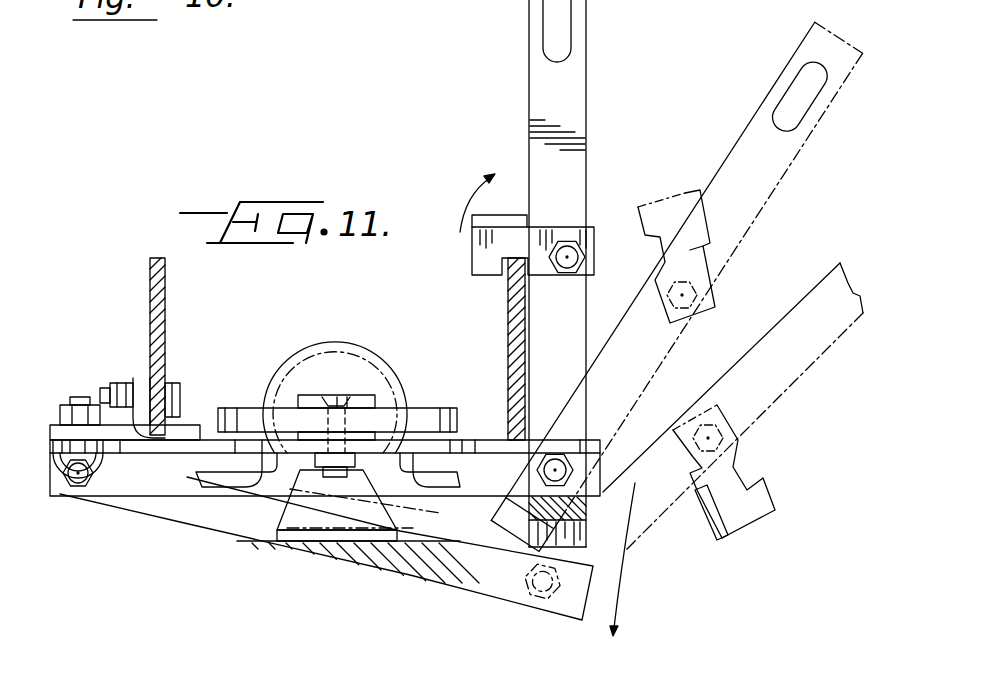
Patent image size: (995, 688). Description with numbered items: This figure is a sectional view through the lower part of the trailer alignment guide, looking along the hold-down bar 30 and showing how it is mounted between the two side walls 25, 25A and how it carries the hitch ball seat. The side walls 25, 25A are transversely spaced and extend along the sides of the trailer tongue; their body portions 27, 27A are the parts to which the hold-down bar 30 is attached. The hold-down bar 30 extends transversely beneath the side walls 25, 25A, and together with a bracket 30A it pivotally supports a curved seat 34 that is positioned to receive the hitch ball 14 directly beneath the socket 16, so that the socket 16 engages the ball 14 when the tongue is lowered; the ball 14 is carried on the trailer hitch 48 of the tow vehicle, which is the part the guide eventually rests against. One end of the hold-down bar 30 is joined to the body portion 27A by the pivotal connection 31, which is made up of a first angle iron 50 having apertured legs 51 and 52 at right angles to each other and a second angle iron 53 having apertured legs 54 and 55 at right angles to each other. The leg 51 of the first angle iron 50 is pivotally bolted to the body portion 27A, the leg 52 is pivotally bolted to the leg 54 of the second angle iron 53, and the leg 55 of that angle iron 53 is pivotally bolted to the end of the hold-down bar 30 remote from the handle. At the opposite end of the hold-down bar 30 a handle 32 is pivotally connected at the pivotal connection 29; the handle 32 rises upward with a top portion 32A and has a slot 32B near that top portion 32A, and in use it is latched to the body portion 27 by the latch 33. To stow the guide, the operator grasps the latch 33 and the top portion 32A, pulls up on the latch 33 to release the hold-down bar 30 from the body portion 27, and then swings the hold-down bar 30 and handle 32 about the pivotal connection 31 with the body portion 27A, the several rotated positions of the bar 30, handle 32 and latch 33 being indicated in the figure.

The hitch ball 14 is at (327, 372).
The socket 16 is at (363, 352).
The side wall 25 is at (510, 374).
The side wall 25A is at (166, 355).
The body portion 27 is at (512, 287).
The body portion 27A is at (166, 275).
The pivotal connection 29 is at (542, 473).
The hold-down bar 30 is at (193, 494).
The bracket 30A is at (368, 397).
The pivotal connection 31 is at (92, 515).
The handle 32 is at (738, 128).
The top portion 32A is at (470, 7).
The slot 32B is at (548, 30).
The latch 33 is at (472, 258).
The curved seat 34 is at (233, 412).
The trailer hitch 48 is at (327, 553).
The first angle iron 50 is at (110, 418).
The leg 51 is at (147, 378).
The leg 52 is at (57, 425).
The second angle iron 53 is at (115, 461).
The leg 54 is at (63, 462).
The leg 55 is at (100, 487).